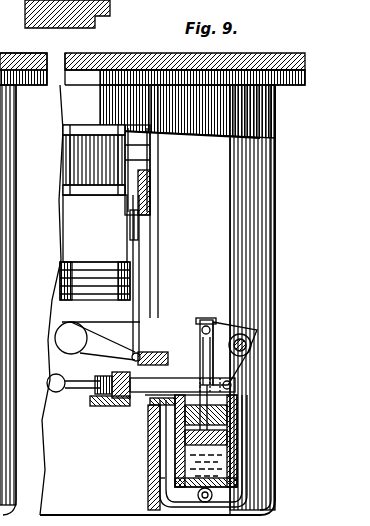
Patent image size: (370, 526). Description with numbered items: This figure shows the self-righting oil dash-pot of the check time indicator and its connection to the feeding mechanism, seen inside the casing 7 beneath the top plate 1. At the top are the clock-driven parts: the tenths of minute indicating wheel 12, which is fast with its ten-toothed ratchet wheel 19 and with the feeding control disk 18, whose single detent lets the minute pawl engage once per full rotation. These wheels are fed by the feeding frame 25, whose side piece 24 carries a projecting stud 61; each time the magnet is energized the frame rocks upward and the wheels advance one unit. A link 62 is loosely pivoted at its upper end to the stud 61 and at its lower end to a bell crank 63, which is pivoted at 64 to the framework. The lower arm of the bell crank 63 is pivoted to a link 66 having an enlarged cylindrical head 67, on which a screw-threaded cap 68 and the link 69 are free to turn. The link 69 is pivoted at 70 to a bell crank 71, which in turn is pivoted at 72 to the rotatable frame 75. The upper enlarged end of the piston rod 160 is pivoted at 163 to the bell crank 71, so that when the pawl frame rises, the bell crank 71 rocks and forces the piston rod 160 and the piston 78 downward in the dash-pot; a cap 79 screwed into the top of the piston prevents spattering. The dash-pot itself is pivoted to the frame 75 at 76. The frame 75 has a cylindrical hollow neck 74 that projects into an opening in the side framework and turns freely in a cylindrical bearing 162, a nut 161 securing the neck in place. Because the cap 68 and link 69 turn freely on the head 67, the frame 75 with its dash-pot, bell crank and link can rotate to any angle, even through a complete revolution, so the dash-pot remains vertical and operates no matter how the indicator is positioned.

The top plate 1 is at (137, 54).
The casing 7 is at (274, 202).
The tenths of minute indicating wheel 12 is at (135, 140).
The feeding control disk 18 is at (152, 172).
The ratchet wheel 19 is at (150, 164).
The side piece 24 is at (158, 176).
The feeding frame 25 is at (95, 228).
The stud 61 is at (150, 229).
The link 62 is at (133, 282).
The bell crank 63 is at (95, 340).
The pivot 64 is at (62, 335).
The link 66 is at (80, 389).
The cylindrical head 67 is at (101, 395).
The screw-threaded cap 68 is at (132, 399).
The link 69 is at (148, 350).
The pivot 70 is at (240, 385).
The bell crank 71 is at (260, 340).
The pivot 72 is at (250, 336).
The cylindrical hollow neck 74 is at (152, 415).
The rotatable frame 75 is at (163, 480).
The pivot 76 is at (216, 498).
The piston 78 is at (232, 434).
The cap 79 is at (230, 416).
The piston rod 160 is at (199, 350).
The nut 161 is at (148, 408).
The cylindrical bearing 162 is at (155, 430).
The pivot 163 is at (213, 322).